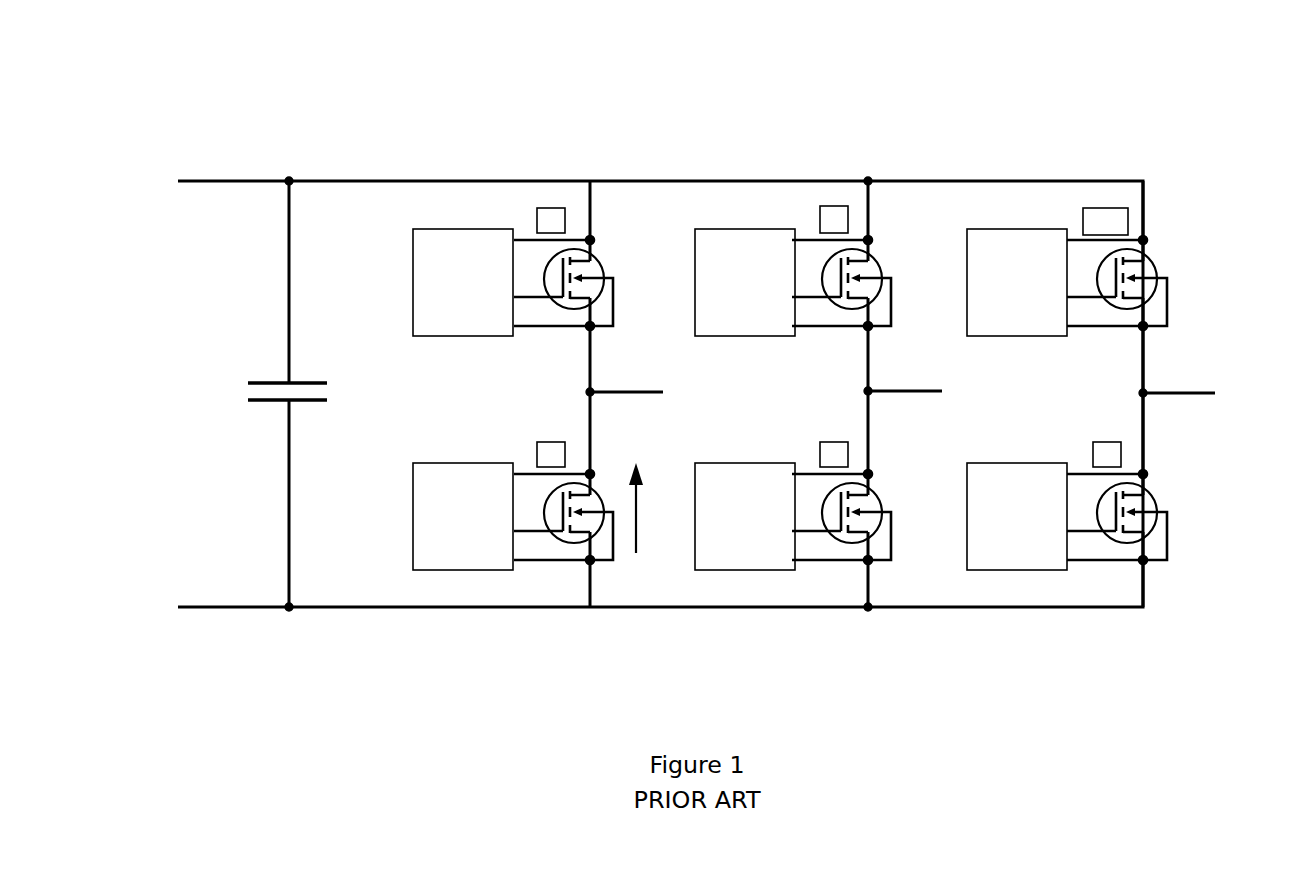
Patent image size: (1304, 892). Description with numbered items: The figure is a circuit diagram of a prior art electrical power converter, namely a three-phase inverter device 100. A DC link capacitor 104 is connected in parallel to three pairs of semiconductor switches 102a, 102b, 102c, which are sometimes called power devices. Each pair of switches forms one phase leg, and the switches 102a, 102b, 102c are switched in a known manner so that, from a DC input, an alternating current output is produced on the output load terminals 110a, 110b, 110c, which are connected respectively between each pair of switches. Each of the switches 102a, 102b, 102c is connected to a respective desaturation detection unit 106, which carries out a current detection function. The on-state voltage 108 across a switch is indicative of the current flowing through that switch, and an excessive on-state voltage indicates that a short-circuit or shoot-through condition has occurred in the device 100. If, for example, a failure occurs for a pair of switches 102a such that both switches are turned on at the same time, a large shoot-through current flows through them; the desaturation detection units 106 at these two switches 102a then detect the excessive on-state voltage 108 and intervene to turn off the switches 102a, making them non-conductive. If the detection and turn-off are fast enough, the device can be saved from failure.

The three-phase inverter device 100 is at (1103, 137).
The semiconductor switches 102a is at (548, 335).
The semiconductor switches 102b is at (820, 335).
The semiconductor switches 102c is at (1092, 335).
The DC link capacitor 104 is at (270, 382).
The desaturation detection unit 106 is at (740, 399).
The on-state voltage 108 is at (635, 520).
The output load terminal 110a is at (620, 390).
The output load terminal 110b is at (913, 388).
The output load terminal 110c is at (1192, 388).